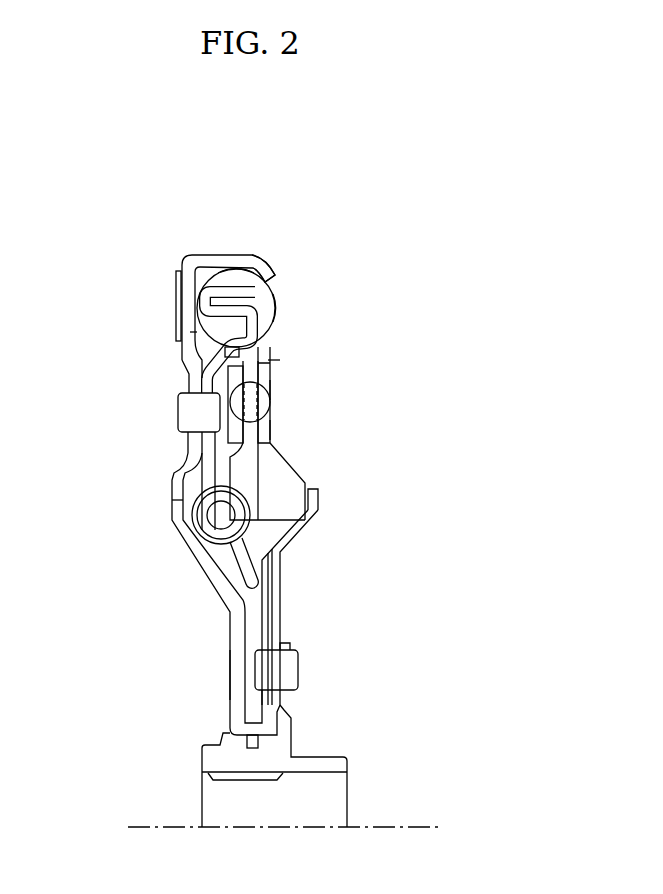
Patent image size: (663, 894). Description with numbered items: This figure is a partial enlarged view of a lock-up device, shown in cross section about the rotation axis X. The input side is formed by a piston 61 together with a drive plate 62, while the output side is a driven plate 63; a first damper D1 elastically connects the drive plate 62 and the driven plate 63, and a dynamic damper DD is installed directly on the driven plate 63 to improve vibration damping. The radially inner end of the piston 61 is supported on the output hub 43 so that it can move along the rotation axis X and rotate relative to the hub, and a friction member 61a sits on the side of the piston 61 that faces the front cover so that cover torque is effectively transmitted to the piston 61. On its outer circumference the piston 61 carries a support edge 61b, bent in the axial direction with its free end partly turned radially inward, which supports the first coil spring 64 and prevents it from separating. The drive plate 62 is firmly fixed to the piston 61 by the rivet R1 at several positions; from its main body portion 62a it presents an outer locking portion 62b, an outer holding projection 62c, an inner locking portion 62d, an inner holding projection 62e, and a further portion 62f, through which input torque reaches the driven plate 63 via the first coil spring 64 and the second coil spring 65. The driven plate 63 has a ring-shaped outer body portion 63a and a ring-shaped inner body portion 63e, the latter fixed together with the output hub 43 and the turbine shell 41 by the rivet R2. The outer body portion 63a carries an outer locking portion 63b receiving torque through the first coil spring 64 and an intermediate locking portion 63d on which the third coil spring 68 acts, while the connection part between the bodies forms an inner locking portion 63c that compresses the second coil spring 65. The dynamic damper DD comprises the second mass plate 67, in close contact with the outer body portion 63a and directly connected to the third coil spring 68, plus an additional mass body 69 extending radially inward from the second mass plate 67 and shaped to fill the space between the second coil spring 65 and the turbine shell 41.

The piston 61 is at (178, 372).
The friction member 61a is at (177, 285).
The support edge 61b is at (262, 270).
The drive plate 62 is at (199, 455).
The main body portion 62a is at (188, 434).
The outer locking portion 62b is at (212, 272).
The outer holding projection 62c is at (274, 349).
The inner locking portion 62d is at (212, 506).
The inner holding projection 62e is at (273, 485).
The lever tongue 62f is at (222, 475).
The driven plate 63 is at (273, 329).
The outer body portion 63a is at (259, 455).
The outer locking portion 63b is at (242, 270).
The inner locking portion 63c is at (282, 543).
The intermediate locking portion 63d is at (266, 405).
The inner body portion 63e is at (236, 601).
The first coil spring 64 is at (275, 297).
The second coil spring 65 is at (192, 531).
The second mass plate 67 is at (288, 390).
The third coil spring 68 is at (274, 430).
The additional mass body 69 is at (278, 495).
The turbine shell 41 is at (305, 530).
The output hub 43 is at (287, 762).
The rivet R1 is at (178, 406).
The rivet R2 is at (300, 673).
The first damper D1 is at (196, 332).
The dynamic damper DD is at (273, 360).
The rotation axis X is at (281, 826).